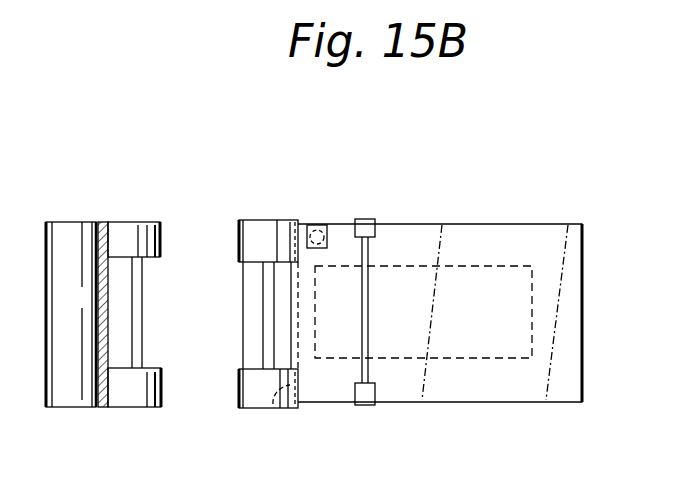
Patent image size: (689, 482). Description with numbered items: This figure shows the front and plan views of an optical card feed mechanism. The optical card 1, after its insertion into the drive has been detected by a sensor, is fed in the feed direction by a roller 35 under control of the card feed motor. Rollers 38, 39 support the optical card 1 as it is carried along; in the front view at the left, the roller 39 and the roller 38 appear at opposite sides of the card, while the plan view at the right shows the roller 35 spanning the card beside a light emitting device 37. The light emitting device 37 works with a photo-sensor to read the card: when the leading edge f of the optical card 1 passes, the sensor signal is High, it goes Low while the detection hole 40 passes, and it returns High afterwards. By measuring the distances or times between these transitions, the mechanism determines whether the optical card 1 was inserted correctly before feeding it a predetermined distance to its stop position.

The optical card 1 is at (103, 408).
The roller 35 is at (374, 221).
The light emitting device 37 is at (327, 224).
The roller 38 is at (141, 226).
The roller 39 is at (85, 226).
The detection hole 40 is at (310, 223).
The leading edge f is at (274, 408).